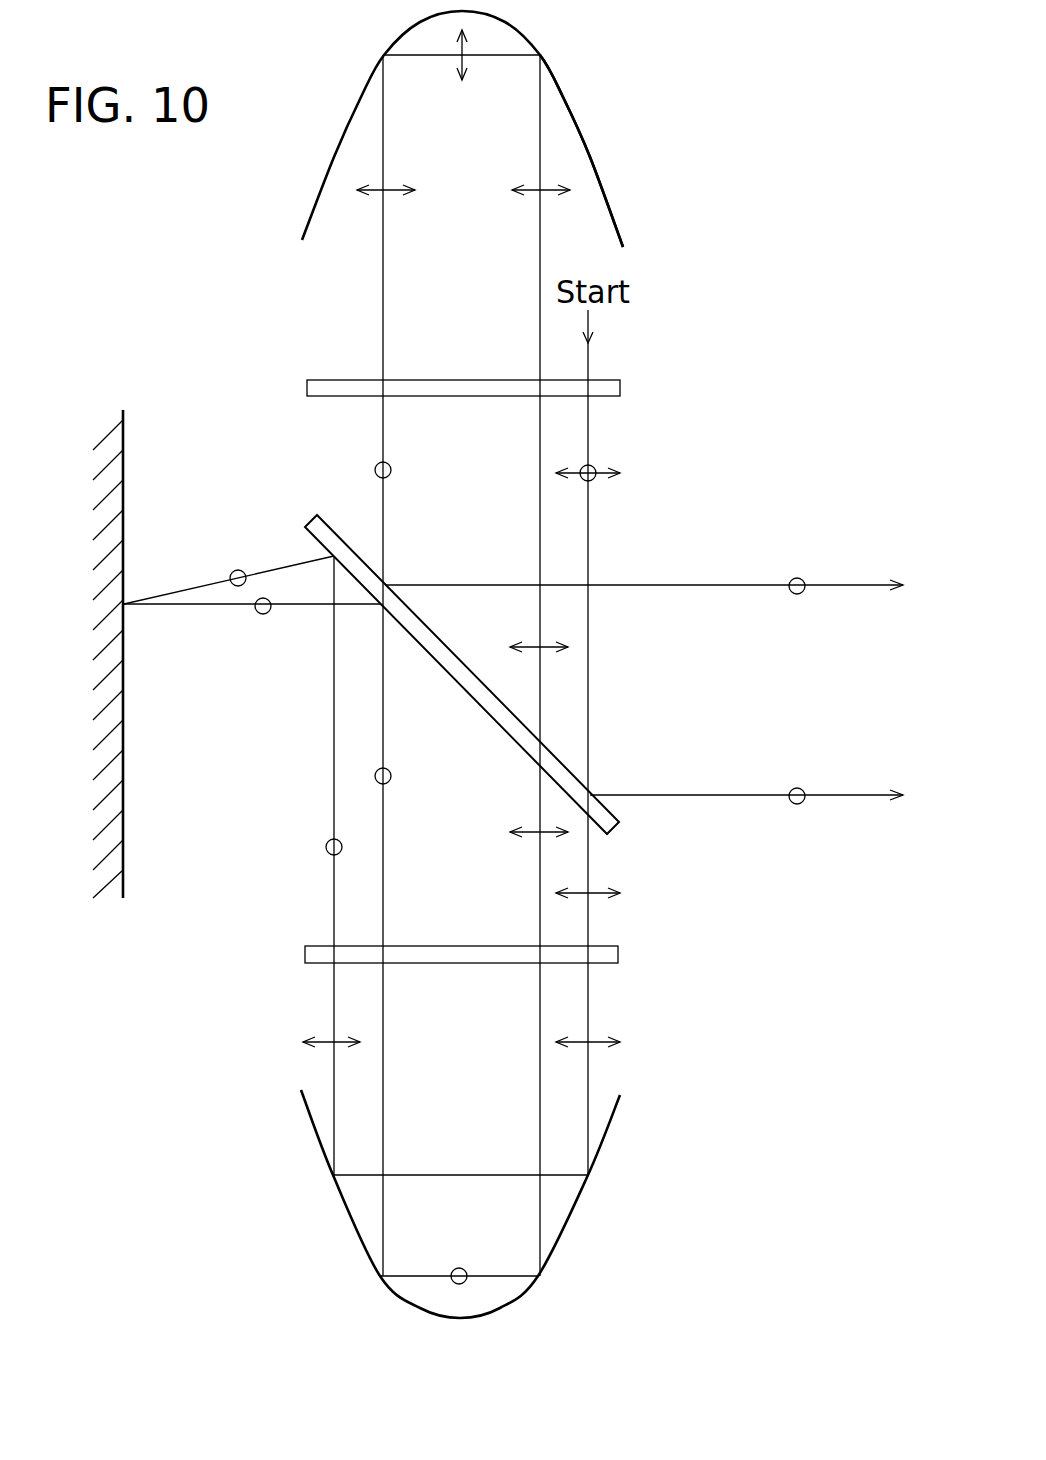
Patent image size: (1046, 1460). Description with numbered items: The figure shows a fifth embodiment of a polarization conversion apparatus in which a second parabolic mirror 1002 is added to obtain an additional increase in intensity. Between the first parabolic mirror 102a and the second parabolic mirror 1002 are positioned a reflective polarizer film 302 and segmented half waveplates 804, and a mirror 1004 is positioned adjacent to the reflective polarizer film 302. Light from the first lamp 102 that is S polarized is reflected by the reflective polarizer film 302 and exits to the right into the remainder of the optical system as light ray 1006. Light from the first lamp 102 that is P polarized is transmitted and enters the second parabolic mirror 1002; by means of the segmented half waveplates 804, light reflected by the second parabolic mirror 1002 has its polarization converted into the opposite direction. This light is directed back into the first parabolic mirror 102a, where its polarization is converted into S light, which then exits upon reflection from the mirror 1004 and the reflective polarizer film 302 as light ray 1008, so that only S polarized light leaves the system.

The first lamp 102 is at (568, 96).
The first parabolic mirror 102a is at (590, 157).
The segmented ½ waveplates 804 is at (620, 388).
The mirror 1004 is at (123, 793).
The reflective polarizer film 302 is at (562, 768).
The light ray 1006 is at (741, 585).
The light ray 1008 is at (741, 795).
The second parabolic mirror 1002 is at (584, 1201).